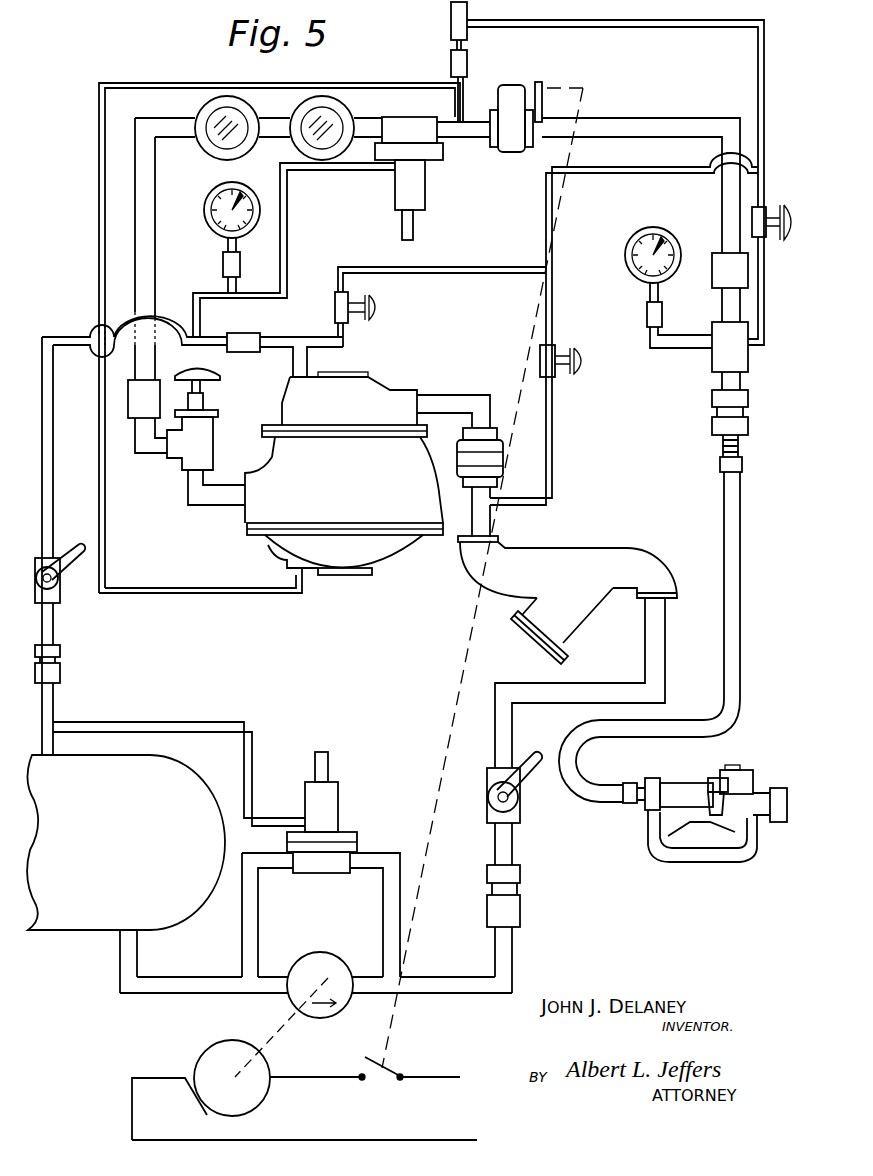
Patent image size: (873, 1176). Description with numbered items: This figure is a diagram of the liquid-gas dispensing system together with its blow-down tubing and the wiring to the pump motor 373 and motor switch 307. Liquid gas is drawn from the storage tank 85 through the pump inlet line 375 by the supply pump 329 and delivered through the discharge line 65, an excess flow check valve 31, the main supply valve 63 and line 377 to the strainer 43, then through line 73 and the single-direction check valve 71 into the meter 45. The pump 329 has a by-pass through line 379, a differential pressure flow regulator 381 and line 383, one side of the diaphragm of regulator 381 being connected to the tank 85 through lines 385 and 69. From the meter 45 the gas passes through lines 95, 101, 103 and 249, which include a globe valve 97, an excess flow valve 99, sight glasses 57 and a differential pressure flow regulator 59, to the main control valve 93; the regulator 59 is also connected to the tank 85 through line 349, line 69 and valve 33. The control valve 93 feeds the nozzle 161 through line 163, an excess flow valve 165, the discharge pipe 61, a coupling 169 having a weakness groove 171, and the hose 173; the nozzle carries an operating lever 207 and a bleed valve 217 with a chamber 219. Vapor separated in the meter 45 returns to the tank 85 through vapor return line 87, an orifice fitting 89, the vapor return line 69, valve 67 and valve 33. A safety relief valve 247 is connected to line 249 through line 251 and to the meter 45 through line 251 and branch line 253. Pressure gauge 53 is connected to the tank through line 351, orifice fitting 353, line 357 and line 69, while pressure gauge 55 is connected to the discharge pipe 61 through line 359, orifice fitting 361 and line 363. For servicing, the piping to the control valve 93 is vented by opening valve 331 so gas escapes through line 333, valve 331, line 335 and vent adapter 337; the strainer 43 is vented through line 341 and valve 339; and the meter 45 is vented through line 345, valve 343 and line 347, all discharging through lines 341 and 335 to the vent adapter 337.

The excess flow check valve 31 is at (521, 912).
The valve 33 is at (62, 670).
The strainer 43 is at (608, 552).
The meter 45 is at (356, 485).
The pressure gauge 53 is at (232, 185).
The pressure gauge 55 is at (640, 238).
The sight glasses 57 is at (200, 112).
The differential pressure flow regulator 59 is at (434, 209).
The discharge pipe 61 is at (722, 380).
The ball type shut off valve 63 is at (521, 816).
The pump discharge line 65 is at (513, 855).
The valve 67 is at (62, 598).
The vapor return line 69 is at (72, 318).
The one way check valve 71 is at (457, 462).
The line 73 is at (448, 395).
The supply tank 85 is at (120, 841).
The vapor return line 87 is at (278, 340).
The orifice fitting 89 is at (240, 352).
The main control valve 93 is at (515, 88).
The line 95 is at (192, 505).
The globe valve 97 is at (214, 457).
The excess flow valve 99 is at (157, 411).
The line 101 is at (156, 250).
The line 103 is at (375, 117).
The nozzle 161 is at (670, 765).
The line 163 is at (635, 122).
The excess flow valve 165 is at (712, 255).
The coupling 169 is at (712, 400).
The weakness groove 171 is at (748, 420).
The hose 173 is at (724, 490).
The operating lever 207 is at (668, 860).
The bleed valve 217 is at (700, 792).
The chamber 219 is at (775, 788).
The safety relief valve 247 is at (451, 57).
The line 249 is at (463, 140).
The line 251 is at (465, 95).
The branch line 253 is at (212, 83).
The motor switch 307 is at (380, 1082).
The supply pump 329 is at (318, 1014).
The valve 331 is at (770, 208).
The line 333 is at (742, 345).
The line 335 is at (760, 60).
The vent adapter 337 is at (467, 18).
The valve 339 is at (556, 377).
The line 341 is at (584, 167).
The valve 343 is at (335, 300).
The line 345 is at (345, 340).
The line 347 is at (462, 268).
The line 349 is at (287, 195).
The line 351 is at (223, 260).
The orifice fitting 353 is at (228, 282).
The line 357 is at (200, 311).
The line 359 is at (650, 292).
The orifice fitting 361 is at (647, 316).
The line 363 is at (652, 338).
The pump motor 373 is at (250, 1108).
The pump inlet line 375 is at (133, 993).
The line 377 is at (647, 637).
The line 379 is at (383, 918).
The differential pressure flow regulator 381 is at (338, 808).
The line 383 is at (243, 935).
The line 385 is at (248, 728).